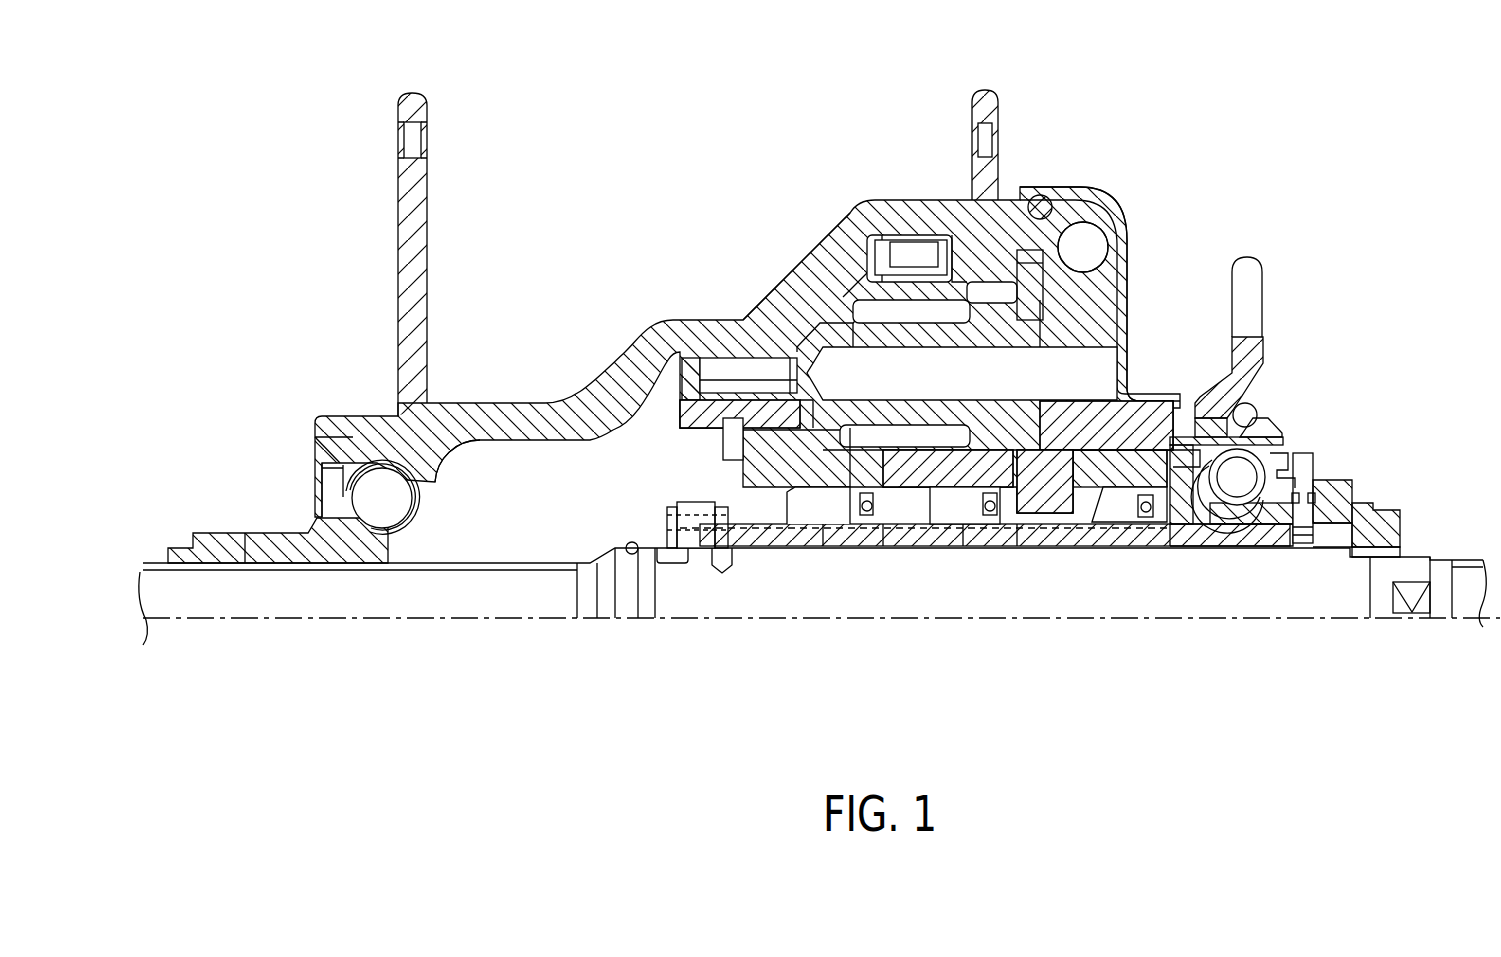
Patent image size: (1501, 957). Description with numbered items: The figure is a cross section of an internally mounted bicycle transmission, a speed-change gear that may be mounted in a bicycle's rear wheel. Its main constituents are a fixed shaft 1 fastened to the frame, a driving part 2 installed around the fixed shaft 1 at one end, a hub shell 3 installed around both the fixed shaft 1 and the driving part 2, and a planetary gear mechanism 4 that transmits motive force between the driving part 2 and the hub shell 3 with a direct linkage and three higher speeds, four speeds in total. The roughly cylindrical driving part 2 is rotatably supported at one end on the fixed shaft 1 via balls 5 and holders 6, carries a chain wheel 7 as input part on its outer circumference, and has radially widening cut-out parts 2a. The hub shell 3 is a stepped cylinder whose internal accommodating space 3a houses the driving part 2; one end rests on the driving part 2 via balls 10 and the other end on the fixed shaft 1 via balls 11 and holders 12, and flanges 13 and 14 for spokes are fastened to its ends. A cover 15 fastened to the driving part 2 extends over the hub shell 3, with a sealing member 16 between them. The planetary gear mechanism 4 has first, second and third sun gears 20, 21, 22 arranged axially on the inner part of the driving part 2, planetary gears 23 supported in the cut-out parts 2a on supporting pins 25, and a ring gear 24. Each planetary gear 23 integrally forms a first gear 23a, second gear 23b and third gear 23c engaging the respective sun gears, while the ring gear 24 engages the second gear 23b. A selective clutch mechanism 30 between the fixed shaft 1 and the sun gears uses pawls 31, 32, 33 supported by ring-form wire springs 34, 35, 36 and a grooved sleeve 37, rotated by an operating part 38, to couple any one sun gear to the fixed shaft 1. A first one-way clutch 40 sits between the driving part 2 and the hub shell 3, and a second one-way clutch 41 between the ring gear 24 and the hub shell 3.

The fixed shaft 1 is at (1298, 600).
The driving part 2 is at (1150, 397).
The cut-out parts 2a is at (1110, 242).
The hub shell 3 is at (780, 312).
The internal accommodating space 3a is at (557, 478).
The planetary gear mechanism 4 is at (822, 262).
The balls 5 is at (1243, 478).
The holders 6 is at (1278, 497).
The chain wheel 7 is at (1252, 292).
The balls 10 is at (1090, 240).
The balls 11 is at (395, 498).
The holders 12 is at (278, 530).
The flange 13 is at (407, 193).
The flange 14 is at (983, 103).
The cover 15 is at (1083, 190).
The sealing member 16 is at (1043, 205).
The first sun gear 20 is at (783, 470).
The second sun gear 21 is at (925, 500).
The third sun gear 22 is at (1070, 495).
The planetary gear 23 is at (818, 300).
The first gear 23a is at (852, 302).
The second gear 23b is at (958, 267).
The third gear 23c is at (1017, 255).
The ring gear 24 is at (917, 247).
The supporting pin 25 is at (1085, 357).
The selective clutch mechanism 30 is at (1190, 548).
The pawl 31 is at (807, 512).
The pawl 32 is at (955, 520).
The pawl 33 is at (1130, 510).
The ring-form wire spring 34 is at (868, 518).
The ring-form wire spring 35 is at (993, 520).
The ring-form wire spring 36 is at (1160, 525).
The sleeve 37 is at (1255, 525).
The operating part 38 is at (1303, 460).
The first one-way clutch 40 is at (733, 372).
The second one-way clutch 41 is at (872, 250).